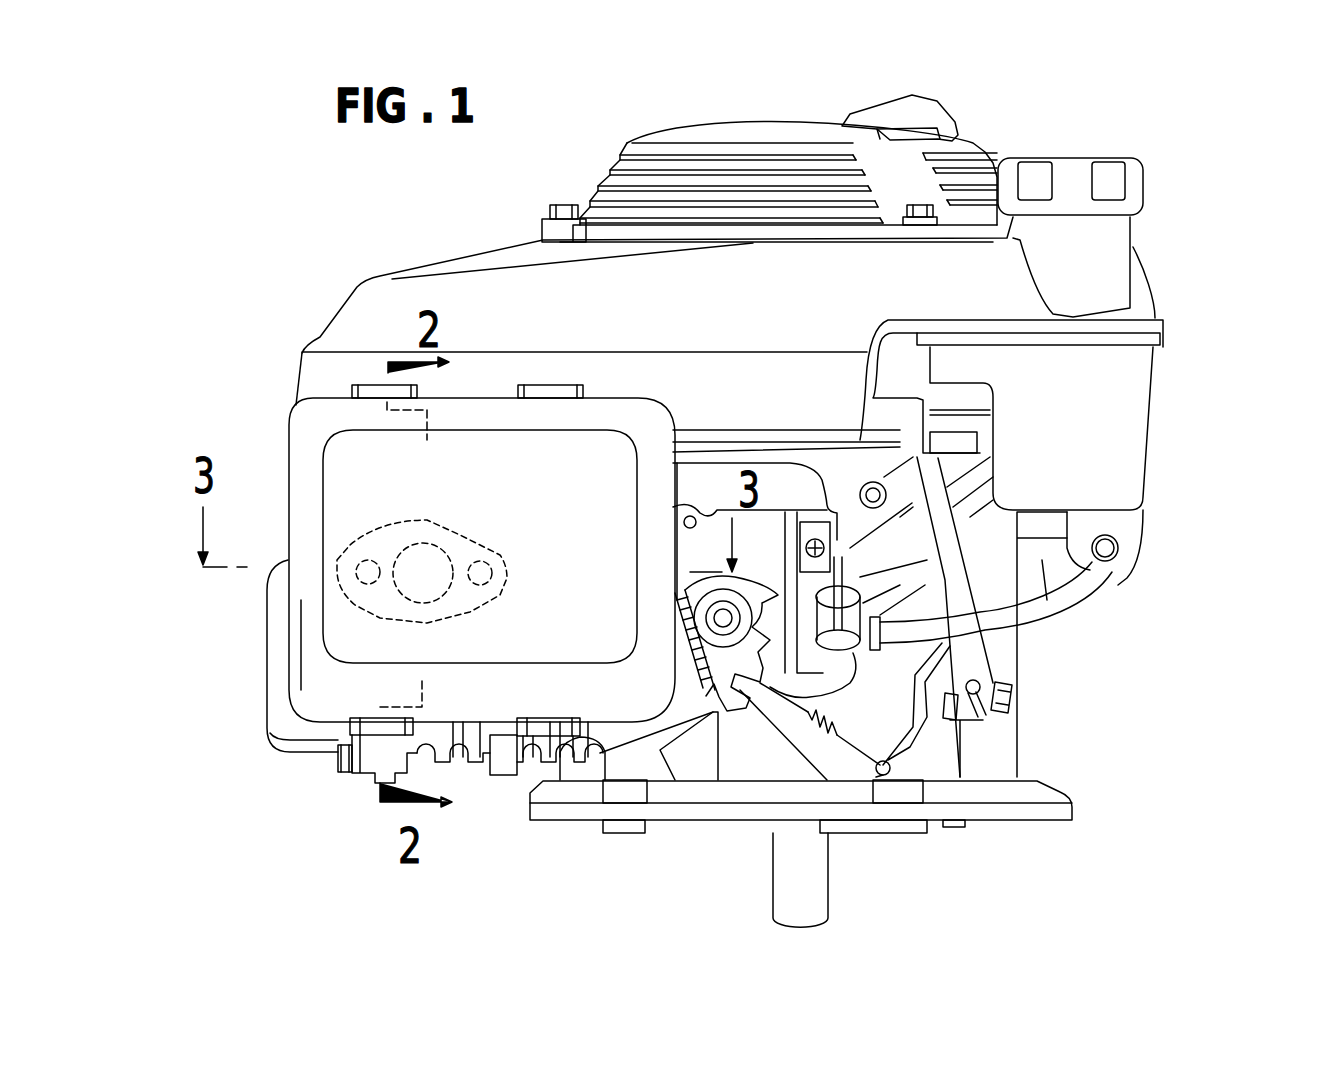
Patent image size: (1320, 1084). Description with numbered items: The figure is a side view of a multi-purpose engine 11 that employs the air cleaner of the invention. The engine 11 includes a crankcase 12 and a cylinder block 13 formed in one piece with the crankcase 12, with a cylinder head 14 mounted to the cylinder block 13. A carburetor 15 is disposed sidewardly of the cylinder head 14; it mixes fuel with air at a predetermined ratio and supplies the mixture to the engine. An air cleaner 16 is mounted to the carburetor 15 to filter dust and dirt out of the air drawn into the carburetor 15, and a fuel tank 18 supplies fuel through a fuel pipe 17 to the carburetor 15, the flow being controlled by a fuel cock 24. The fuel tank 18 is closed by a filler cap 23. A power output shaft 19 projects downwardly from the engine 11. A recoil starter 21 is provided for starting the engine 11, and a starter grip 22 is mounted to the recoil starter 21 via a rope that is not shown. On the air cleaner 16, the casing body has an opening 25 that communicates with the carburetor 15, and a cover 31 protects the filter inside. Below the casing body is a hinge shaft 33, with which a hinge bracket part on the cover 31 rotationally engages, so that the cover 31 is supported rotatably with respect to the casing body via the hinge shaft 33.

The multi-purpose engine 11 is at (341, 268).
The crankcase 12 is at (1000, 750).
The cylinder block 13 is at (480, 757).
The cylinder head 14 is at (283, 705).
The carburetor 15 is at (692, 483).
The air cleaner 16 is at (281, 451).
The fuel pipe 17 is at (1082, 597).
The fuel tank 18 is at (1125, 402).
The power output shaft 19 is at (813, 896).
The recoil starter 21 is at (677, 121).
The starter grip 22 is at (935, 110).
The filler cap 23 is at (1133, 185).
The fuel cock 24 is at (843, 577).
The opening 25 is at (437, 553).
The cover 31 is at (307, 627).
The hinge shaft 33 is at (382, 748).